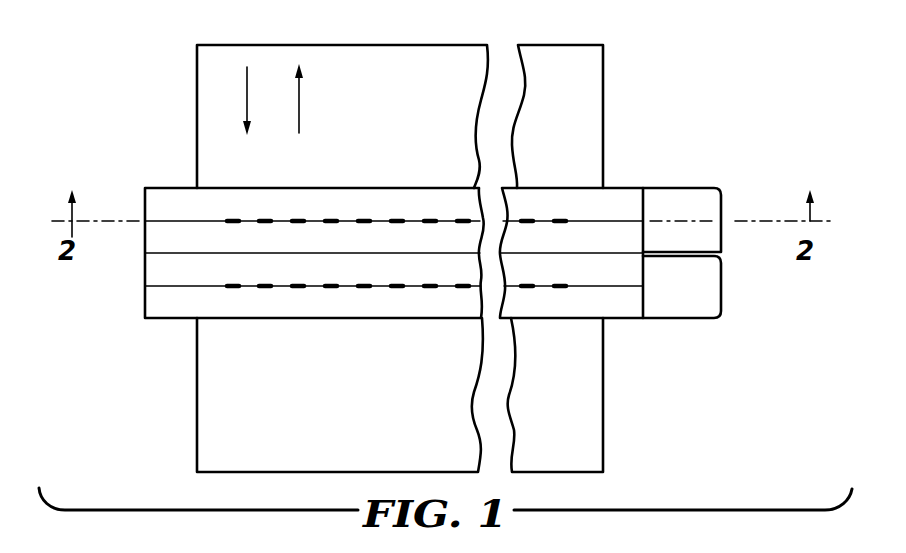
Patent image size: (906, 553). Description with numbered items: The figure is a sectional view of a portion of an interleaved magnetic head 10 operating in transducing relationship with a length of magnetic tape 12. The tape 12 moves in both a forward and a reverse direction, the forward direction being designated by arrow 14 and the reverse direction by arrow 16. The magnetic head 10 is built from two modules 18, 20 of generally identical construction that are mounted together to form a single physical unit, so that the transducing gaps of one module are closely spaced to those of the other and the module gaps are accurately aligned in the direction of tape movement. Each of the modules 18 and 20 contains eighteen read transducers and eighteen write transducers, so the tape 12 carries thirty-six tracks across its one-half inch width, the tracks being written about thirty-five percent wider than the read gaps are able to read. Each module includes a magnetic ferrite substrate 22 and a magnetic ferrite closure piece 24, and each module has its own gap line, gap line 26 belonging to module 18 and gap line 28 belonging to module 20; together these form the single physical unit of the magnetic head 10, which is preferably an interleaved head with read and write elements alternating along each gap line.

The magnetic head 10 is at (386, 220).
The magnetic tape 12 is at (197, 97).
The arrow 14 is at (246, 103).
The arrow 16 is at (300, 103).
The module 18 is at (721, 221).
The module 20 is at (721, 283).
The magnetic ferrite substrate 22 is at (632, 211).
The magnetic ferrite closure piece 24 is at (632, 243).
The gap line 26 is at (145, 221).
The gap line 28 is at (150, 286).